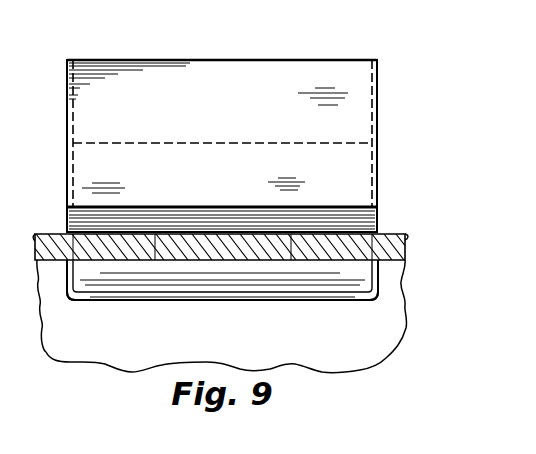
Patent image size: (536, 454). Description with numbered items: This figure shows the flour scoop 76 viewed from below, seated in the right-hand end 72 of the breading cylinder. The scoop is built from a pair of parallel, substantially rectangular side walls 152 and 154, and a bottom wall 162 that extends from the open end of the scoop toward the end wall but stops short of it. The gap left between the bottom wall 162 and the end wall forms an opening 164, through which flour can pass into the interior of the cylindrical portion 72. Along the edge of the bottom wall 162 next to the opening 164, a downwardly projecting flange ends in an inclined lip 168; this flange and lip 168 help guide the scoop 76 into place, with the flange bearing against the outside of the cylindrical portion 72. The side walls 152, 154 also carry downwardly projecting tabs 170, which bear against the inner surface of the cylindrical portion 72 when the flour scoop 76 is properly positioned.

The right-hand end of breading cylinder 72 is at (42, 234).
The flour scoop 76 is at (204, 60).
The side wall 152 is at (378, 107).
The side wall 154 is at (67, 106).
The bottom wall 162 is at (237, 115).
The opening 164 is at (214, 266).
The inclined lip 168 is at (201, 206).
The tabs 170 is at (65, 272).